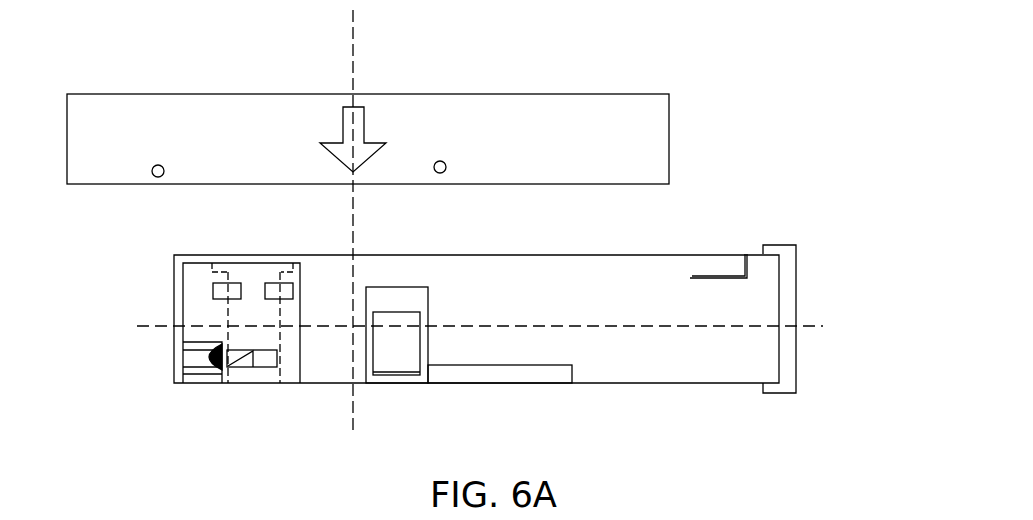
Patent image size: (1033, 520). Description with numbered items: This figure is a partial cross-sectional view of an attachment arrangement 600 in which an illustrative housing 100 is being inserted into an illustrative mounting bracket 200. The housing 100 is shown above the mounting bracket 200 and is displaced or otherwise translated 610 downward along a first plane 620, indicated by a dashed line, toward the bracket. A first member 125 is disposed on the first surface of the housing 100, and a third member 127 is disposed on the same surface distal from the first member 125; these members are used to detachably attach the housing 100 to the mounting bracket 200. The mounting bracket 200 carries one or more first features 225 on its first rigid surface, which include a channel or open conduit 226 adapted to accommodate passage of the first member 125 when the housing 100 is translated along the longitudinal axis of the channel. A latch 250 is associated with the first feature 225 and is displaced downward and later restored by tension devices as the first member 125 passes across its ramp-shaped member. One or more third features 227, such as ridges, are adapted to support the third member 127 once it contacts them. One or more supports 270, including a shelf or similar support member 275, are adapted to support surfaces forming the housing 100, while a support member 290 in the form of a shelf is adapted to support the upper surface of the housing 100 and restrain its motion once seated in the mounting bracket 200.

The housing 100 is at (157, 82).
The first member 125 is at (164, 168).
The third member 127 is at (446, 165).
The mounting bracket 200 is at (791, 237).
The first feature 225 is at (182, 283).
The channel or open conduit 226 is at (192, 359).
The third feature 227 is at (505, 365).
The latch 250 is at (250, 275).
The support 270 is at (397, 287).
The shelf or support member 275 is at (396, 387).
The support member 290 is at (703, 275).
The assembly system 600 is at (652, 44).
The translation 610 is at (377, 140).
The first plane 620 is at (352, 17).